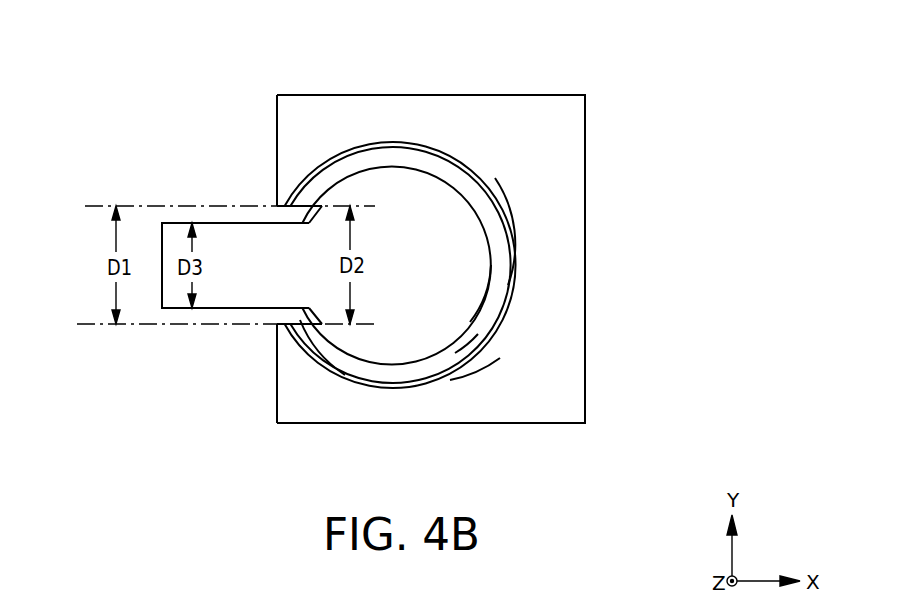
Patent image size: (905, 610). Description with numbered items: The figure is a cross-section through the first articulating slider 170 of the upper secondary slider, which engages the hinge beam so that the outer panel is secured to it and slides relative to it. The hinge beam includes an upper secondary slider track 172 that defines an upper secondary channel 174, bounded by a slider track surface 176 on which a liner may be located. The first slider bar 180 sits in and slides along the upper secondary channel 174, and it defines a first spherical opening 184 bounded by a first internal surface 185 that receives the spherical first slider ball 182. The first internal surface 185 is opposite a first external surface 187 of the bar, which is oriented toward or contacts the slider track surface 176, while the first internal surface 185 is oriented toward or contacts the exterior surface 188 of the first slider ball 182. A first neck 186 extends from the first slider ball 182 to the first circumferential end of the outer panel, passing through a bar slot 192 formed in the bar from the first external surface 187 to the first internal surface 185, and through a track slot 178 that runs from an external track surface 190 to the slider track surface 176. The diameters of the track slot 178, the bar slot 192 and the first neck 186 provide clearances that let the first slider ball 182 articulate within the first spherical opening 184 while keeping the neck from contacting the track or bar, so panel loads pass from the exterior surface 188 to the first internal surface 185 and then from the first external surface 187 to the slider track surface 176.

The first articulating slider 170 is at (677, 249).
The upper secondary slider track 172 is at (508, 128).
The upper secondary channel 174 is at (422, 137).
The slider track surface 176 is at (508, 232).
The track slot 178 is at (266, 205).
The slider bar 180 is at (500, 258).
The slider ball 182 is at (440, 298).
The spherical opening 184 is at (488, 333).
The first internal surface 185 is at (333, 337).
The neck 186 is at (228, 290).
The first external surface 187 is at (477, 347).
The exterior surface 188 is at (335, 192).
The external track surface 190 is at (277, 157).
The bar slot 192 is at (300, 299).